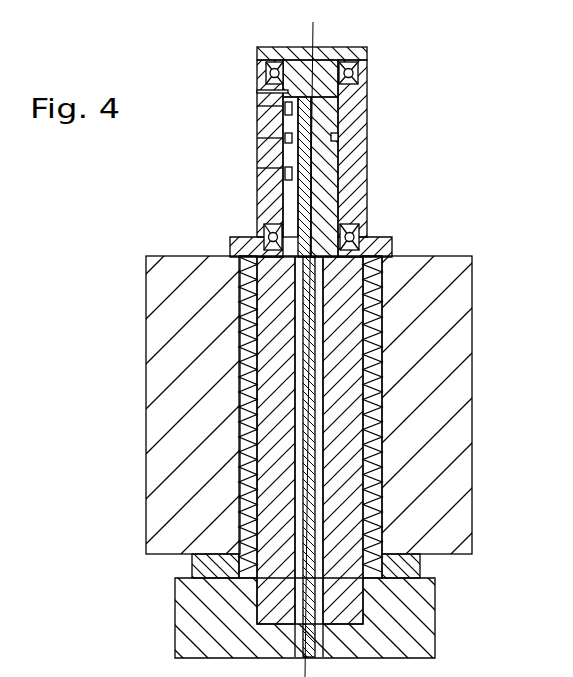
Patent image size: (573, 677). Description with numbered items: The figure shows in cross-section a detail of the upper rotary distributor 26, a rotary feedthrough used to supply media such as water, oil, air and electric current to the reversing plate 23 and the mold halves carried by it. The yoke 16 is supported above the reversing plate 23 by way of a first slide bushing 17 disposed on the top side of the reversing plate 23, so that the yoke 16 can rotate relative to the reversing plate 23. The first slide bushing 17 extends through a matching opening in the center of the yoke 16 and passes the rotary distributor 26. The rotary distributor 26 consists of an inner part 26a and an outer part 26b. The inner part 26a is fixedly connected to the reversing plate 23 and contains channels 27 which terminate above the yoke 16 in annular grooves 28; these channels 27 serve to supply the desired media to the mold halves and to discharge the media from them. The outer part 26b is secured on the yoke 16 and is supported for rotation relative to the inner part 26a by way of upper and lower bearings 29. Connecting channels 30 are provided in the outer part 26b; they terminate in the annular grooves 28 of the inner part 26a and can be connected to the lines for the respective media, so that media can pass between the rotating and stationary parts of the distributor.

The yoke 16 is at (457, 300).
The first slide bushing 17 is at (412, 563).
The reversing plate 23 is at (427, 637).
The rotary distributor 26 is at (376, 173).
The inner part 26a is at (322, 77).
The outer part 26b is at (270, 193).
The channels 27 is at (297, 393).
The annular grooves 28 is at (290, 92).
The bearings 29 is at (360, 73).
The connecting channels 30 is at (258, 107).